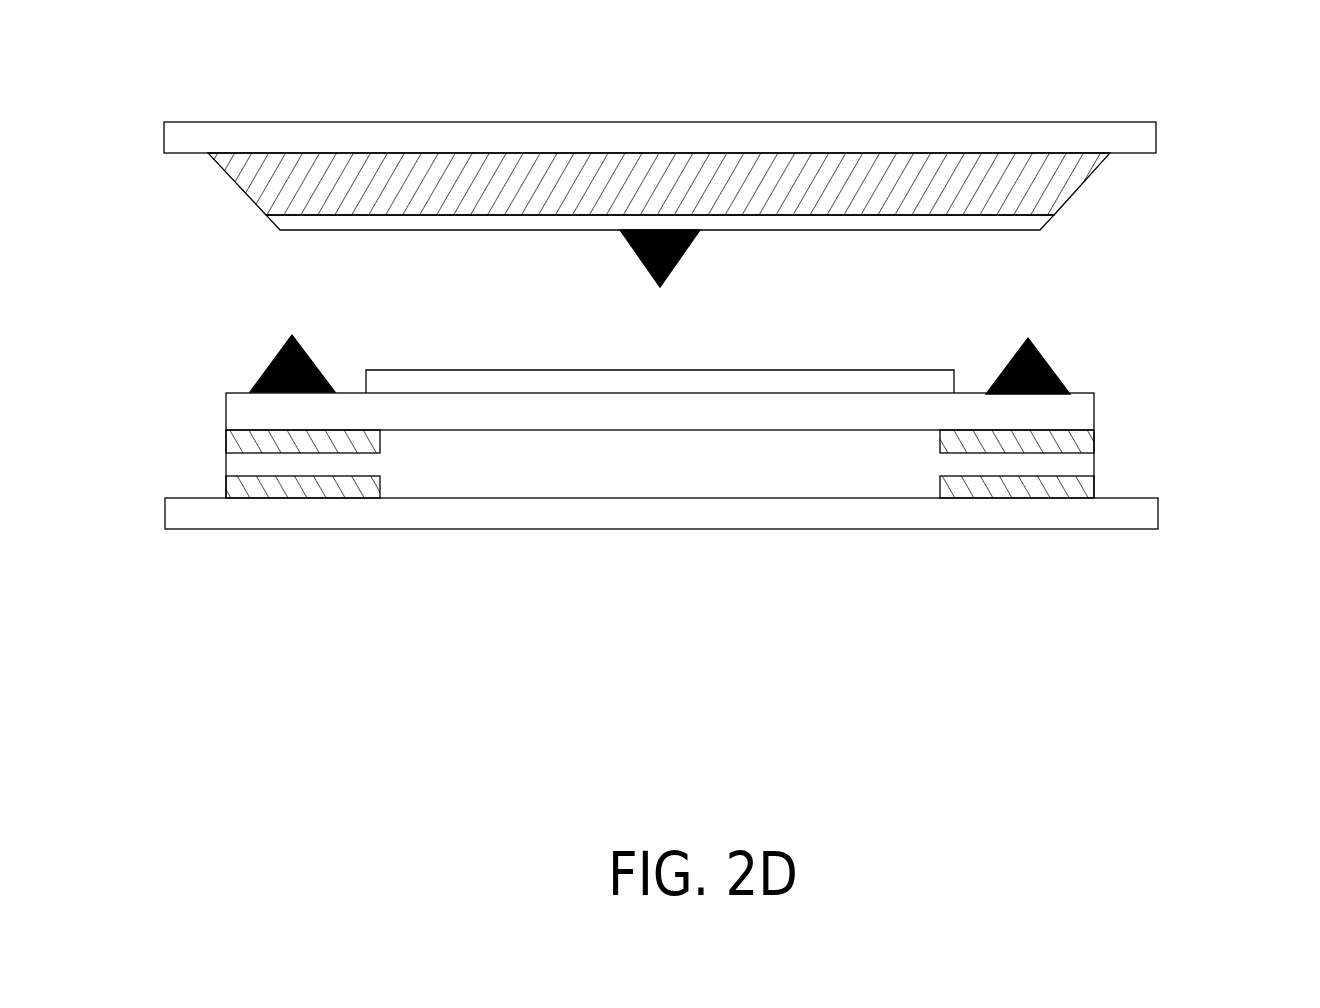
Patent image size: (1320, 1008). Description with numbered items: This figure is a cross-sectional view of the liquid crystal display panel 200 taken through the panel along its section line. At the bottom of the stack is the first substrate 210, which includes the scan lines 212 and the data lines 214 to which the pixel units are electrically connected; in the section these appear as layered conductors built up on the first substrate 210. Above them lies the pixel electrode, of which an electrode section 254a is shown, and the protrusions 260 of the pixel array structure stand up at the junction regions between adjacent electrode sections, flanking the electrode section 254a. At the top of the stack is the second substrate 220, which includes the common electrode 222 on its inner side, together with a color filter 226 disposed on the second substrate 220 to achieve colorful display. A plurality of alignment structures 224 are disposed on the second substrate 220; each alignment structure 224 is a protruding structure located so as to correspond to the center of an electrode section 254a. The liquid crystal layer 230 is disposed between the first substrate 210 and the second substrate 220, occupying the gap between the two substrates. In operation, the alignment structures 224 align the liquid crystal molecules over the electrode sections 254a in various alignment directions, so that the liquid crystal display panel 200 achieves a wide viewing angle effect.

The liquid crystal display panel 200 is at (706, 365).
The first substrate 210 is at (1145, 512).
The scan line 212 is at (233, 488).
The data line 214 is at (238, 441).
The second substrate 220 is at (1143, 138).
The common electrode 222 is at (1032, 224).
The alignment structure 224 is at (652, 232).
The color filter 226 is at (1063, 177).
The liquid crystal layer 230 is at (986, 301).
The electrode section 254a is at (907, 383).
The protrusion 260 is at (272, 363).